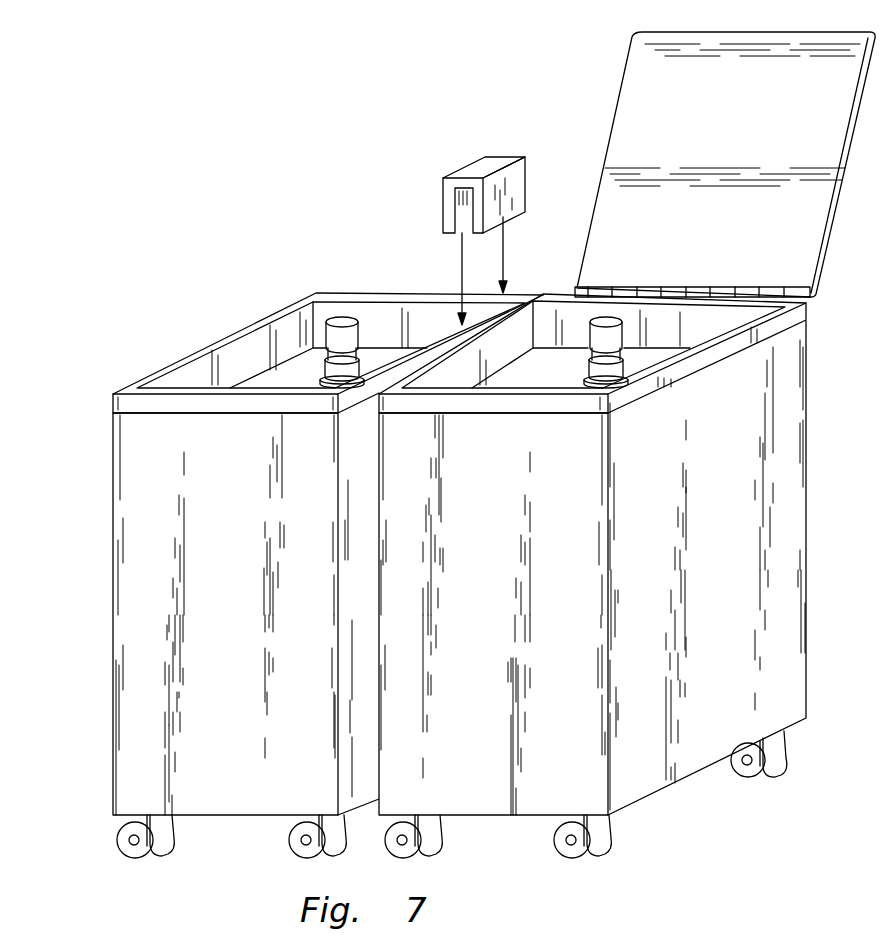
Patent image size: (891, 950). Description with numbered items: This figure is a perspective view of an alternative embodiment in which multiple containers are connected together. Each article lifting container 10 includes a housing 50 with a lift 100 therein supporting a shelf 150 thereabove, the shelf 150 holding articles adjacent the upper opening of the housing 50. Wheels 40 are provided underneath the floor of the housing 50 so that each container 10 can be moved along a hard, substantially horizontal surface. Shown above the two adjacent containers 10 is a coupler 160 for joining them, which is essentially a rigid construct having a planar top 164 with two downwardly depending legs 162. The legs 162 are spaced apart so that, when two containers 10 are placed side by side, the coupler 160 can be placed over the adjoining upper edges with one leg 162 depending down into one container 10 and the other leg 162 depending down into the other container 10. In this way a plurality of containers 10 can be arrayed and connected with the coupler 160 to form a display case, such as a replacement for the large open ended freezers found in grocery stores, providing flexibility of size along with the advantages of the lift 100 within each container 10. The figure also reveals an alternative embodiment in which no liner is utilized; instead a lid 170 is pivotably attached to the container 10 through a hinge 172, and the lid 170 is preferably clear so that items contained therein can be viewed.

The article lifting container 10 is at (240, 316).
The wheels 40 is at (607, 842).
The housing 50 is at (140, 585).
The lift 100 is at (362, 323).
The shelf 150 is at (258, 385).
The coupler 160 is at (472, 225).
The legs 162 is at (510, 189).
The planar top 164 is at (472, 172).
The lid 170 is at (747, 146).
The hinge 172 is at (600, 289).